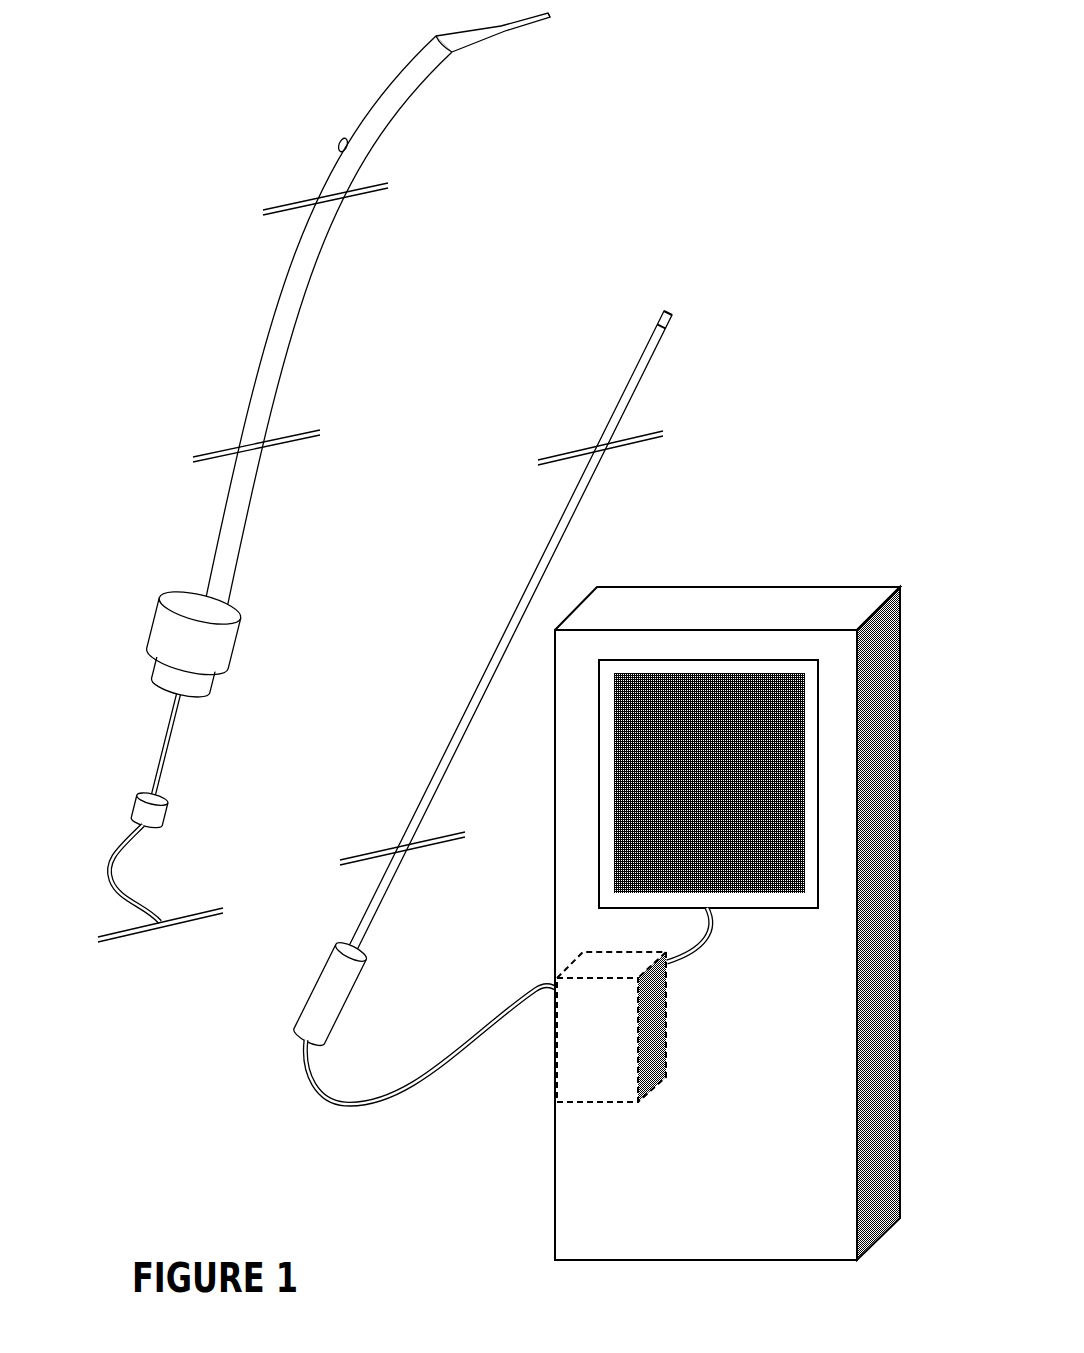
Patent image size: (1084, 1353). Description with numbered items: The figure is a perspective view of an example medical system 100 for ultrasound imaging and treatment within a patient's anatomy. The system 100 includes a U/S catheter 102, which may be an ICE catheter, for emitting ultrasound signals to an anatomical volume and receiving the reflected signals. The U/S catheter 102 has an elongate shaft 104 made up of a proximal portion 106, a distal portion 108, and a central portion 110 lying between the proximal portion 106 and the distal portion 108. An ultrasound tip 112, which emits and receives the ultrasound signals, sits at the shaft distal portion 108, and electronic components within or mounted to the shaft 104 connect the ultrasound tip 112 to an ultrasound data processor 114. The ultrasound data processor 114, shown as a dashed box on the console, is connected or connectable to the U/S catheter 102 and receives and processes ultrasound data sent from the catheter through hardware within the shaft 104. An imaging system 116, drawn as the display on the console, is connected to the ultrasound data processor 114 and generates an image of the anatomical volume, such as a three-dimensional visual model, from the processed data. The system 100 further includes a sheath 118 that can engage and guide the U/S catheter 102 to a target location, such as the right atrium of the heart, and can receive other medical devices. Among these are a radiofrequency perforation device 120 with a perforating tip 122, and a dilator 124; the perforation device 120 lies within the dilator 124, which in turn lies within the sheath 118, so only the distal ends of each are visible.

The medical system 100 is at (815, 193).
The U/S catheter 102 is at (479, 667).
The elongate shaft 104 is at (576, 510).
The proximal portion 106 is at (376, 942).
The distal portion 108 is at (656, 383).
The central portion 110 is at (439, 750).
The ultrasound tip 112 is at (664, 313).
The ultrasound data processor 114 is at (638, 1102).
The imaging system 116 is at (790, 660).
The sheath 118 is at (243, 407).
The radiofrequency perforation device 120 is at (532, 37).
The perforating tip 122 is at (550, 15).
The dilator 124 is at (464, 54).